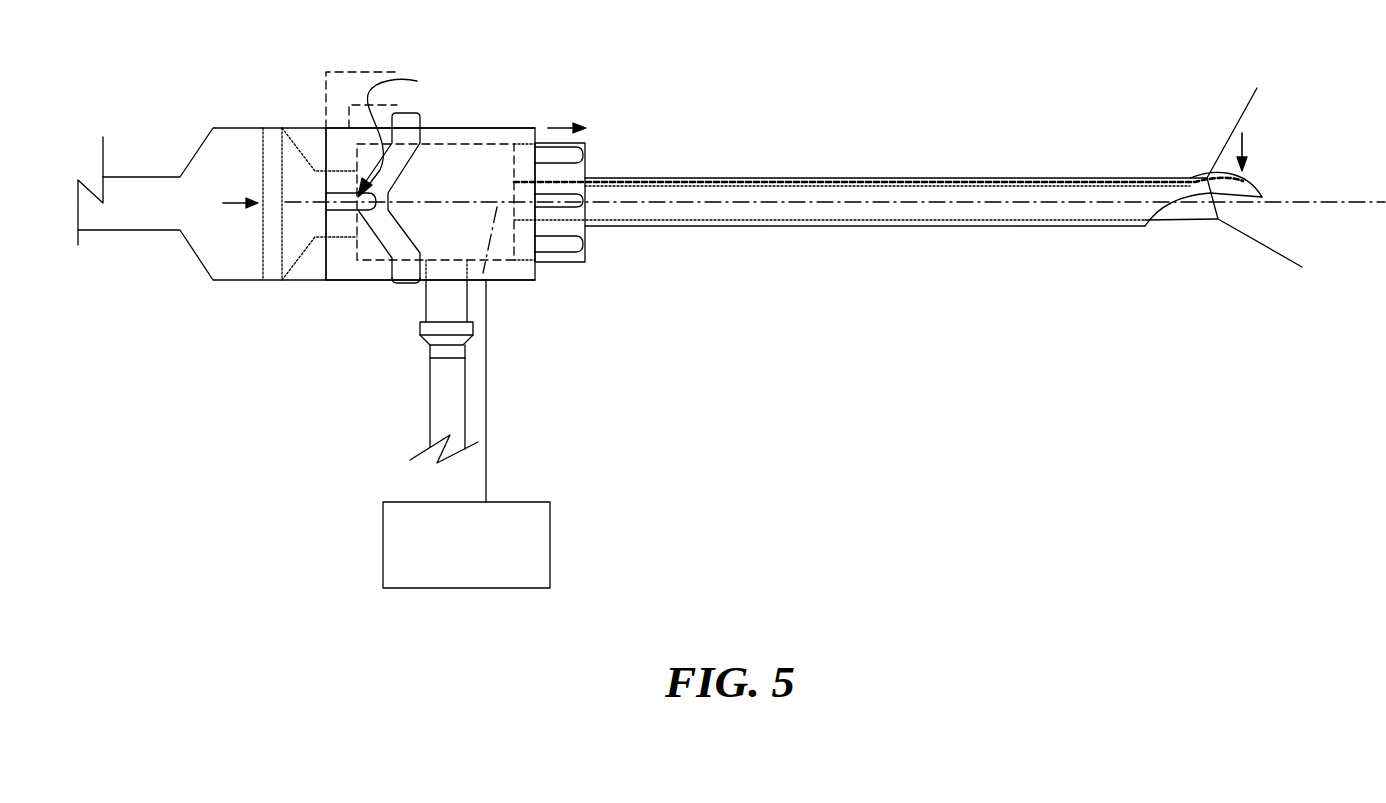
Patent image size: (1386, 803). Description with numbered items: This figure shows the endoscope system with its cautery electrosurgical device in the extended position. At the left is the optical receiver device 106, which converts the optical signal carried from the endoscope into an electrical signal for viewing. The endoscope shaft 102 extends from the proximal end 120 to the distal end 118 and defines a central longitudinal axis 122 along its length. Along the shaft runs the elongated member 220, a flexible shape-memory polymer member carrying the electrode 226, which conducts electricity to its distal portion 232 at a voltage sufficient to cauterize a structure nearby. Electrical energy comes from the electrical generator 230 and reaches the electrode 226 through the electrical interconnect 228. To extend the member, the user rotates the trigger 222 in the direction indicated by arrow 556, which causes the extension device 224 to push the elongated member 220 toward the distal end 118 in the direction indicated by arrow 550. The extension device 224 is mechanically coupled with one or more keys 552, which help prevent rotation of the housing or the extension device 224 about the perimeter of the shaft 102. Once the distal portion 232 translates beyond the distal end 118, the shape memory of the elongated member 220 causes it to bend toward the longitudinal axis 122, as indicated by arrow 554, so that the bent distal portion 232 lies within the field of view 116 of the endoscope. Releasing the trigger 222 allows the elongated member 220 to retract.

The shaft 102 is at (653, 219).
The optical receiver device 106 is at (213, 128).
The field of view 116 is at (1257, 88).
The distal end 118 is at (1218, 216).
The proximal end 120 is at (263, 188).
The longitudinal axis 122 is at (1290, 203).
The elongated member 220 is at (769, 178).
The trigger 222 is at (377, 69).
The extension device 224 is at (422, 114).
The electrode 226 is at (925, 180).
The electrical interconnect 228 is at (505, 190).
The electrical generator 230 is at (497, 502).
The distal portion 232 is at (1243, 189).
The arrow indicating direction of translation 550 is at (563, 127).
The key 552 is at (583, 152).
The arrow indicating bending 554 is at (1243, 133).
The arrow indicating trigger rotation 556 is at (401, 129).